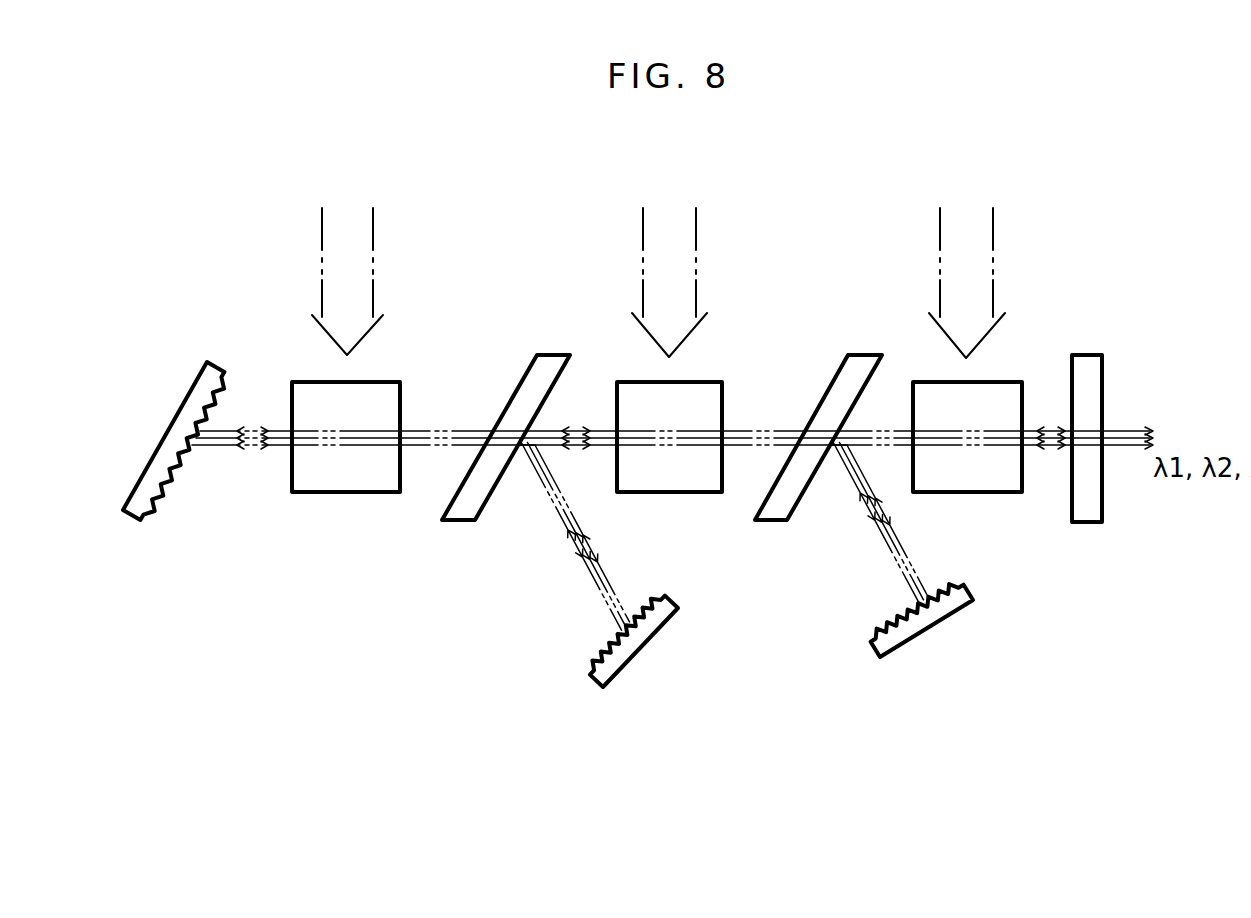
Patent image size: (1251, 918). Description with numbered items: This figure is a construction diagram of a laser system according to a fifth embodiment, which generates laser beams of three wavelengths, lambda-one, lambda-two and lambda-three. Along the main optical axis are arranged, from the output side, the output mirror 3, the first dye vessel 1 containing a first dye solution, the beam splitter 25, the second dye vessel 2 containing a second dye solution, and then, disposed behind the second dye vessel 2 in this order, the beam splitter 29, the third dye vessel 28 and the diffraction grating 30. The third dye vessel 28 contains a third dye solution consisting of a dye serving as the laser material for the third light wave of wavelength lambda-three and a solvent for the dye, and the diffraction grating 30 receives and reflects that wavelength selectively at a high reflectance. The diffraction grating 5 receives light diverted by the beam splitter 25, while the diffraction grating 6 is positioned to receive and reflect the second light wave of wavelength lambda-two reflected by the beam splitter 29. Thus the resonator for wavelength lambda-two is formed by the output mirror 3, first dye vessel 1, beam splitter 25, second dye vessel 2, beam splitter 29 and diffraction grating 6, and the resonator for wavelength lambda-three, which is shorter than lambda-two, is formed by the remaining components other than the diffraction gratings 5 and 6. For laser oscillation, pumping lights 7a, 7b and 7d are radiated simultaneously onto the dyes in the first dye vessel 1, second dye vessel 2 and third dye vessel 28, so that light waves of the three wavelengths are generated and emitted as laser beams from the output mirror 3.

The first dye vessel 1 is at (981, 487).
The second dye vessel 2 is at (673, 487).
The output mirror 3 is at (1088, 515).
The diffraction grating 5 is at (903, 637).
The diffraction grating 6 is at (639, 645).
The pumping light 7a is at (963, 231).
The pumping light 7b is at (666, 226).
The pumping light 7d is at (350, 226).
The beam splitter 25 is at (777, 515).
The third dye vessel 28 is at (347, 486).
The beam splitter 29 is at (464, 513).
The diffraction grating 30 is at (162, 497).